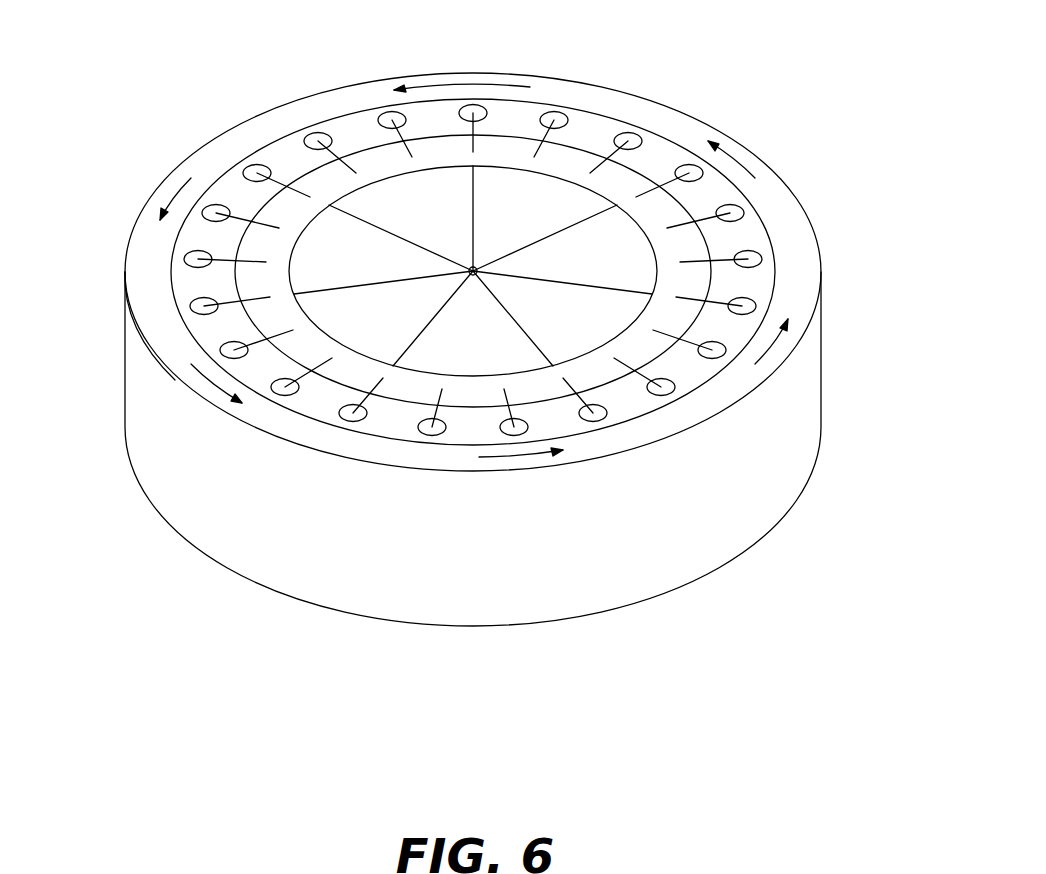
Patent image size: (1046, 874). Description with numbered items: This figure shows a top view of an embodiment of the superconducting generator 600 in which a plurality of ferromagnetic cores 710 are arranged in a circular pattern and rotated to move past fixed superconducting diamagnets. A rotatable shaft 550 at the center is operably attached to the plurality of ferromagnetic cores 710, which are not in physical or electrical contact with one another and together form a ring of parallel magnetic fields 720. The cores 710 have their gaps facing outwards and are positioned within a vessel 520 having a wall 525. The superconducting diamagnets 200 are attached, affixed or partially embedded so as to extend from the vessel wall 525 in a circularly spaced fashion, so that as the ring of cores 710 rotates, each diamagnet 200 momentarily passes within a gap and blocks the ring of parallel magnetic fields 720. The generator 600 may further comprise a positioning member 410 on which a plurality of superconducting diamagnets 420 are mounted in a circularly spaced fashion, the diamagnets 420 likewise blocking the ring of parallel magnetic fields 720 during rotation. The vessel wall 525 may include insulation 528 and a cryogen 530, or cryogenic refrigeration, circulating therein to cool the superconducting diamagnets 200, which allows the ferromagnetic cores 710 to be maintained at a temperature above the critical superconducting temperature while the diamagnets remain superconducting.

The superconducting generator 600 is at (696, 104).
The positioning member 410 is at (360, 82).
The superconducting diamagnets 420 is at (745, 213).
The ferromagnetic cores 710 is at (727, 251).
The ring of parallel magnetic fields 720 is at (705, 302).
The rotatable shaft 550 is at (469, 269).
The superconducting diamagnets 200 is at (668, 398).
The vessel wall 525 is at (590, 432).
The insulation 528 is at (147, 342).
The cryogen 530 is at (212, 390).
The vessel 520 is at (647, 598).